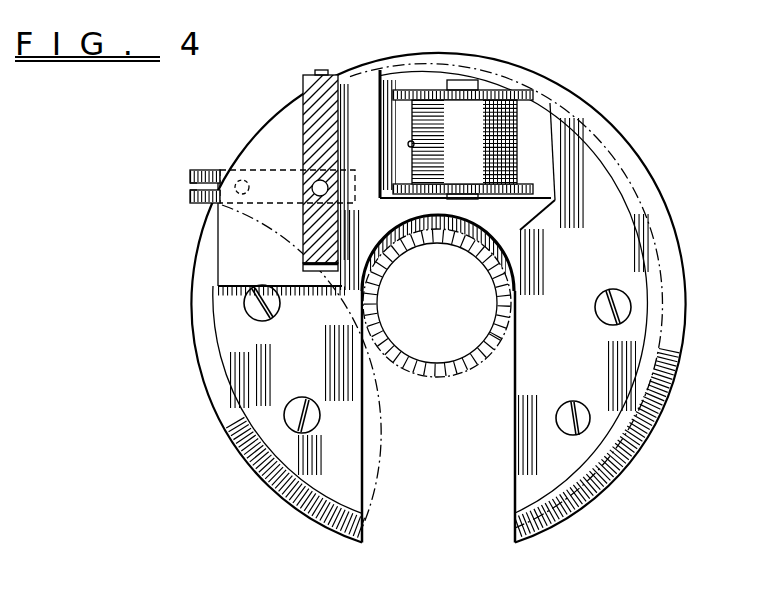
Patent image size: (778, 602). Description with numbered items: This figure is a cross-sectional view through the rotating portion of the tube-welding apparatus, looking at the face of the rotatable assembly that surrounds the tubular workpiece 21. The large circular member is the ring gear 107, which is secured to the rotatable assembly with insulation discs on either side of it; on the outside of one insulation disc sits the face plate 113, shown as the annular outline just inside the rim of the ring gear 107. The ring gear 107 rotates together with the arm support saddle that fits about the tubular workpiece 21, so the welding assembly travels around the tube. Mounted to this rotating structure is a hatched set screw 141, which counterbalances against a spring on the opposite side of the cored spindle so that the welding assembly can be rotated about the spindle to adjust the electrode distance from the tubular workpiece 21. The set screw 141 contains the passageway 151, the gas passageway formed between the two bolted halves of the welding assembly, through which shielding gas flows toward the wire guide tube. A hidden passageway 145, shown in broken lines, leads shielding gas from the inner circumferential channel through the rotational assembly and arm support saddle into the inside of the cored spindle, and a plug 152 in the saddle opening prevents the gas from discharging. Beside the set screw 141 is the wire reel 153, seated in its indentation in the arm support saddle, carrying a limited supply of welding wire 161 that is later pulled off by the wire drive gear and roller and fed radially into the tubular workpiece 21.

The ring gear 107 is at (663, 205).
The face plate 113 is at (613, 163).
The tubular workpiece 21 is at (437, 378).
The set screw 141 is at (323, 70).
The passageway 151 is at (315, 183).
The passageway 145 is at (244, 194).
The plug 152 is at (203, 170).
The wire reel 153 is at (503, 92).
The welding wire 161 is at (515, 172).